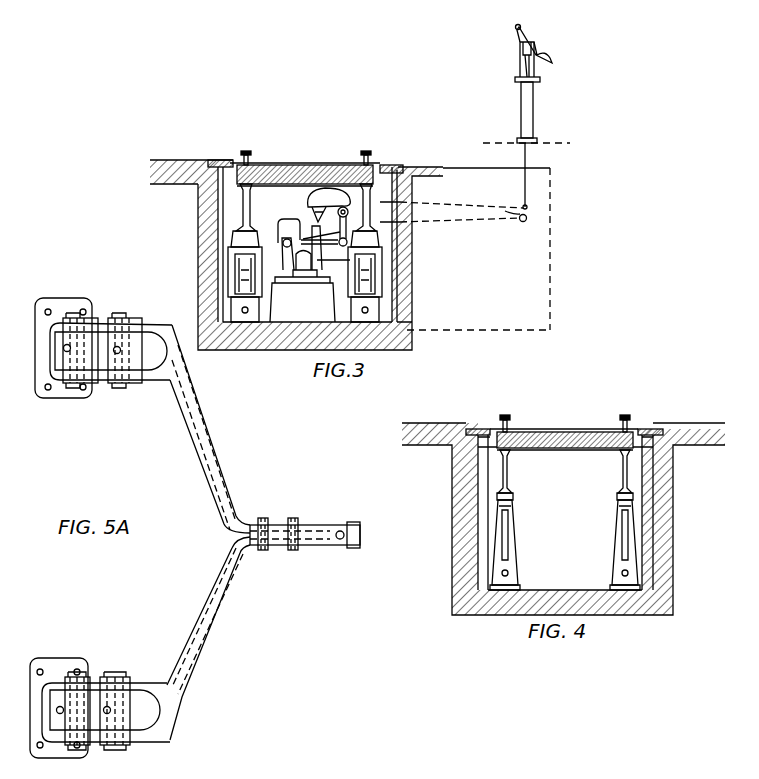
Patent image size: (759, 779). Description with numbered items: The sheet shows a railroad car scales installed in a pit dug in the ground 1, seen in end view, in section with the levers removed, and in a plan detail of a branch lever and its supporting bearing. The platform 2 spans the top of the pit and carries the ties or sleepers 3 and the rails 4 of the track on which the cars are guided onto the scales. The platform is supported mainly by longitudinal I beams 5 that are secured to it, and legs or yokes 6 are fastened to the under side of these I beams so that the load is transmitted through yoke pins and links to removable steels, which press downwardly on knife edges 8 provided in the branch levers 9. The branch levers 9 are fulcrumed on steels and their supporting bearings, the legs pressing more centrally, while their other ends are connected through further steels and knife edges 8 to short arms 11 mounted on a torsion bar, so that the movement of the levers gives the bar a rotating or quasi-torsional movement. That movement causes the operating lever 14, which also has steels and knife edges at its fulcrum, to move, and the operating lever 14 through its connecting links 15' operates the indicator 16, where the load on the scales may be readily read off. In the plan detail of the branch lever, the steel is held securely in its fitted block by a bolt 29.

In FIG. 3, the ground 1 is at (200, 220).
In FIG. 4, the ground 1 is at (680, 490).
In FIG. 3, the platform 2 is at (291, 162).
In FIG. 4, the platform 2 is at (542, 423).
In FIG. 3, the ties or sleepers 3 is at (265, 188).
In FIG. 4, the ties or sleepers 3 is at (598, 449).
In FIG. 3, the rails 4 is at (374, 156).
In FIG. 4, the rails 4 is at (633, 421).
In FIG. 3, the I beams 5 is at (242, 222).
In FIG. 4, the I beams 5 is at (512, 467).
In FIG. 3, the legs or yokes 6 is at (226, 265).
In FIG. 5A, the knife edges 8 is at (80, 318).
In FIG. 5A, the branch levers 9 is at (194, 699).
In FIG. 3, the short arms 11 is at (305, 235).
In FIG. 3, the operating lever 14 is at (312, 213).
In FIG. 3, the connecting links 15' is at (453, 221).
In FIG. 3, the indicator 16 is at (542, 37).
In FIG. 5A, the bolt 29 is at (58, 710).